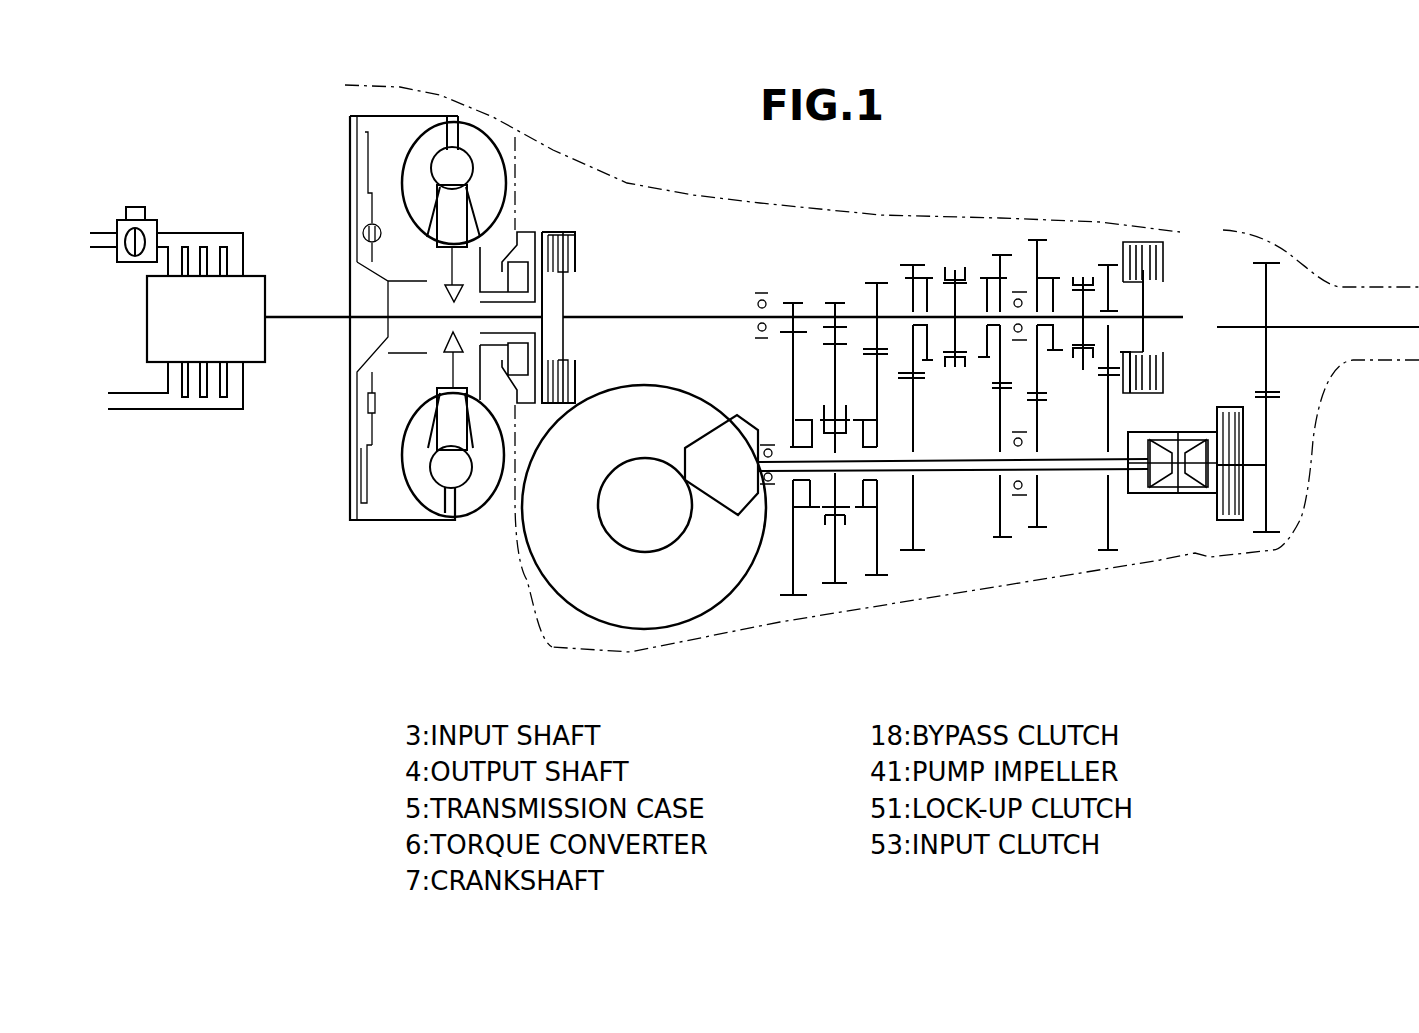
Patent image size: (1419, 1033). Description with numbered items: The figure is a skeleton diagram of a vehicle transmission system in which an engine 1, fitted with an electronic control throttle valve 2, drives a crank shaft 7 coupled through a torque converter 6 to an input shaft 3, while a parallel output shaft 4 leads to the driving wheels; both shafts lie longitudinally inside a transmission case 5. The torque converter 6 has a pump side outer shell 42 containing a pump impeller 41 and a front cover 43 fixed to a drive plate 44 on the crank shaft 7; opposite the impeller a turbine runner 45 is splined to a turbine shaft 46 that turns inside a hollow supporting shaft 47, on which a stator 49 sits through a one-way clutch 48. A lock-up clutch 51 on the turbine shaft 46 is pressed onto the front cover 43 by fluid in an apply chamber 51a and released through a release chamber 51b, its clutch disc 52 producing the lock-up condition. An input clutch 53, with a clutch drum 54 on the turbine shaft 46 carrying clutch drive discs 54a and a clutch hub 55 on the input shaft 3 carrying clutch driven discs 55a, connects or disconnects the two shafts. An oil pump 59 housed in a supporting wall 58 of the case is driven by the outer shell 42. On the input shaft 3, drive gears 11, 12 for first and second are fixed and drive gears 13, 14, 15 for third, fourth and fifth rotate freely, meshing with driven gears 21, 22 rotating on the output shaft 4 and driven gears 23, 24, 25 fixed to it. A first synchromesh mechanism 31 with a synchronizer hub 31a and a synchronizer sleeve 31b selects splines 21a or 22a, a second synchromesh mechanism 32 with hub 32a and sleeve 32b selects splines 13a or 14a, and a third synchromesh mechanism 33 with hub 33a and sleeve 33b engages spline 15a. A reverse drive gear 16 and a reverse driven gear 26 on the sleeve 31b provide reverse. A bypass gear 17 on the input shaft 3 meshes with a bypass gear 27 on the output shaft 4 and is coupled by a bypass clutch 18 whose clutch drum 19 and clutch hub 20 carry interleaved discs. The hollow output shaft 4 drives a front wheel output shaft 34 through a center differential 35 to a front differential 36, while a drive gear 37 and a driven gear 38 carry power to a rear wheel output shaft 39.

The engine 1 is at (147, 318).
The electronic control throttle valve 2 is at (135, 207).
The input shaft 3 is at (690, 312).
The output shaft 4 is at (1095, 475).
The transmission case 5 is at (722, 196).
The torque converter 6 is at (470, 121).
The crank shaft 7 is at (291, 322).
The drive gear for 1st gear ratio 11 is at (786, 302).
The drive gear for 2nd gear ratio 12 is at (868, 283).
The drive gear for 3rd gear ratio 13 is at (900, 265).
The spline 13a is at (928, 365).
The drive gear for 4th gear ratio 14 is at (998, 257).
The spline 14a is at (980, 358).
The drive gear for 5th gear ratio 15 is at (1040, 240).
The spline 15a is at (1052, 365).
The drive gear for reverse speed 16 is at (818, 300).
The bypass gear of the drive side 17 is at (1110, 263).
The bypass clutch 18 is at (1191, 254).
The clutch drum 19 is at (1157, 240).
The clutch hub 20 is at (1150, 287).
The driven gear for 1st gear ratio 21 is at (793, 600).
The spline 21a is at (773, 527).
The driven gear for 2nd gear ratio 22 is at (880, 580).
The spline 22a is at (863, 512).
The driven gear for 3rd gear ratio 23 is at (913, 560).
The driven gear for 4th gear ratio 24 is at (1000, 540).
The driven gear for 5th gear ratio 25 is at (1033, 540).
The driven gear for reverse speed 26 is at (830, 590).
The bypass gear of the driven side 27 is at (1110, 555).
The first synchromesh mechanism 31 is at (811, 536).
The synchronizer hub 31a is at (833, 438).
The synchronizer sleeve 31b is at (833, 408).
The second synchromesh mechanism 32 is at (971, 249).
The synchronizer hub 32a is at (952, 262).
The synchronizer sleeve 32b is at (955, 367).
The third synchromesh mechanism 33 is at (1074, 251).
The synchronizer hub 33a is at (1100, 340).
The synchronizer sleeve 33b is at (1080, 365).
The front wheel output shaft 34 is at (1057, 477).
The center differential 35 is at (1198, 509).
The front differential 36 is at (638, 604).
The drive gear 37 is at (1268, 490).
The driven gear 38 is at (1267, 277).
The rear wheel output shaft 39 is at (1388, 329).
The pump impeller 41 is at (497, 190).
The outer shell on the pump side 42 is at (493, 135).
The front cover 43 is at (353, 420).
The drive plate 44 is at (352, 229).
The turbine runner 45 is at (432, 128).
The turbine shaft 46 is at (527, 328).
The supporting shaft 47 is at (525, 320).
The one-way clutch 48 is at (447, 294).
The stator 49 is at (440, 437).
The lock-up clutch 51 is at (358, 252).
The apply chamber 51a is at (383, 462).
The release chamber 51b is at (360, 200).
The clutch disc 52 is at (360, 494).
The input clutch 53 is at (609, 221).
The clutch drum 54 is at (568, 233).
The clutch drive discs 54a is at (574, 255).
The clutch hub 55 is at (568, 275).
The clutch driven discs 55a is at (570, 388).
The supporting wall 58 is at (525, 533).
The oil pump 59 is at (590, 403).